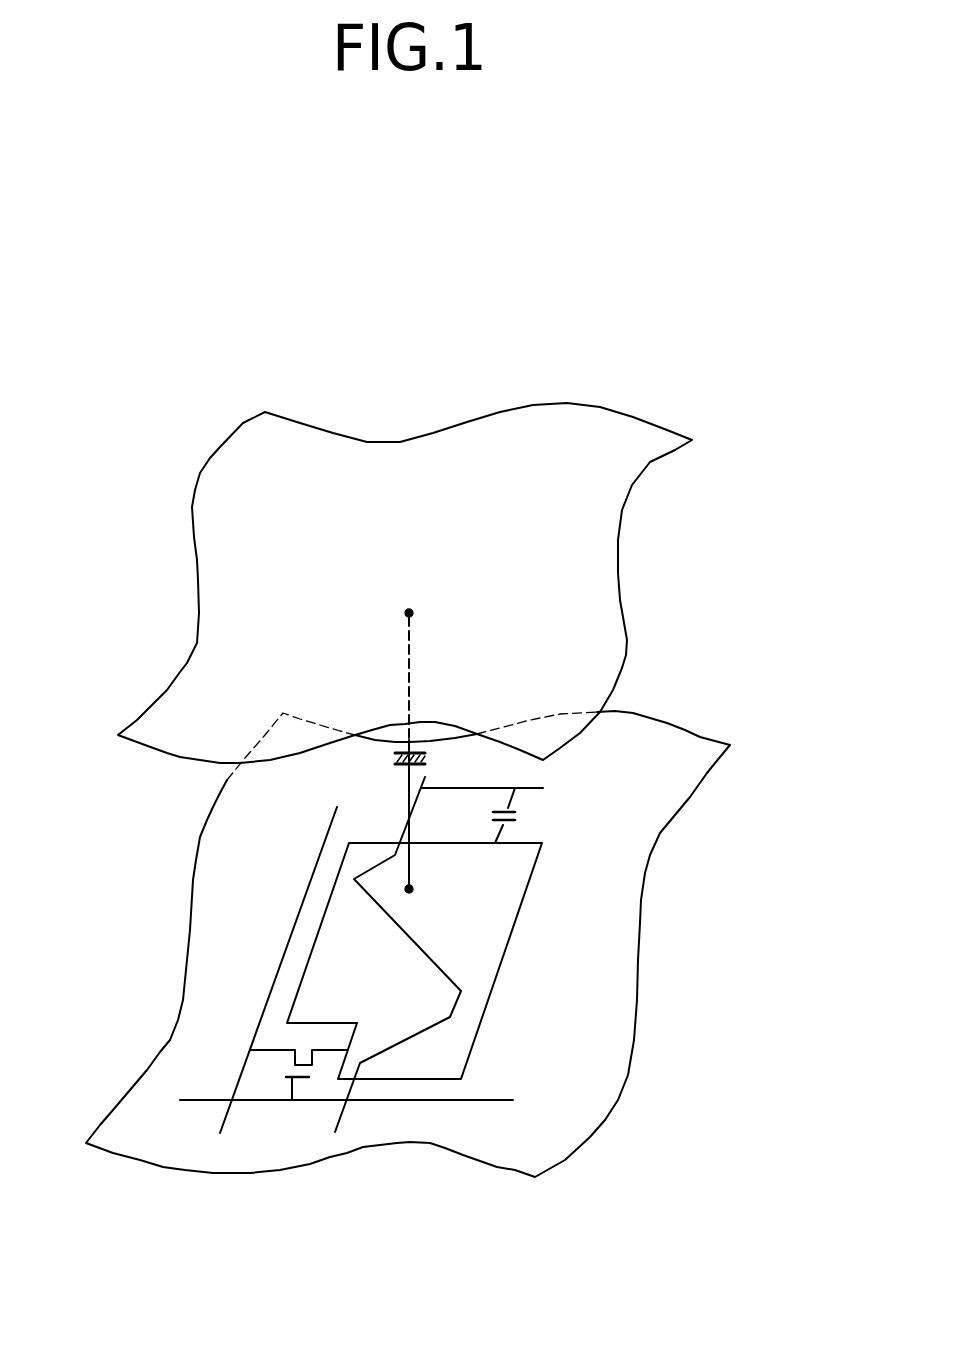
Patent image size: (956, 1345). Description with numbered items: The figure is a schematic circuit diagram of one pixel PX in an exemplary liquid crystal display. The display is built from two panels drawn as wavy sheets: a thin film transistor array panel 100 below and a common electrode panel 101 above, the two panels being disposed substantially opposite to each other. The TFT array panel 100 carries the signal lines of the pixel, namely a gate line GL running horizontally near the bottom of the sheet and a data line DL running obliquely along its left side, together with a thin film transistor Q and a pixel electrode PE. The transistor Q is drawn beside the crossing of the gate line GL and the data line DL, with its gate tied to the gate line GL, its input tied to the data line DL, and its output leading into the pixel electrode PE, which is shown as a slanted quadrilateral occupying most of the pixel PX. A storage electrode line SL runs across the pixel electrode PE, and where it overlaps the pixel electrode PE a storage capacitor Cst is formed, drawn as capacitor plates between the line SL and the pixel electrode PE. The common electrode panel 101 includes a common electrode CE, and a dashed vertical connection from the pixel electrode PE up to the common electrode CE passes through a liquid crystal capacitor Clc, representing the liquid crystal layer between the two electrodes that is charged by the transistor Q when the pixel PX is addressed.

The common electrode CE is at (620, 522).
The common electrode panel 101 is at (425, 583).
The thin film transistor array panel 100 is at (421, 930).
The pixel PX is at (462, 930).
The pixel electrode PE is at (525, 897).
The data line DL is at (281, 952).
The gate line GL is at (340, 1078).
The storage electrode line SL is at (439, 938).
The thin film transistor Q is at (298, 1074).
The storage capacitor Cst is at (531, 815).
The liquid crystal capacitor Clc is at (386, 751).